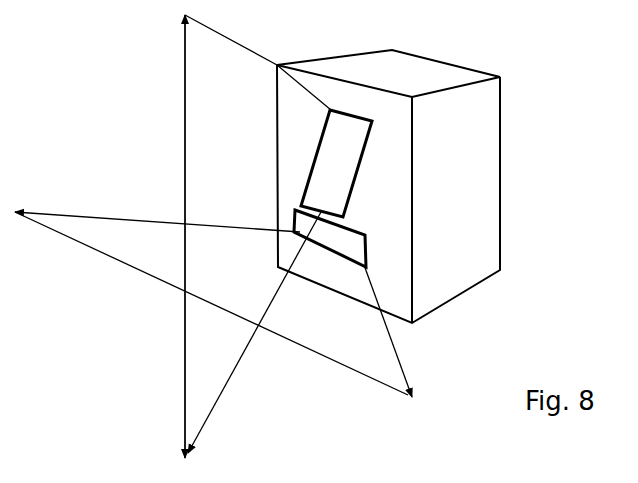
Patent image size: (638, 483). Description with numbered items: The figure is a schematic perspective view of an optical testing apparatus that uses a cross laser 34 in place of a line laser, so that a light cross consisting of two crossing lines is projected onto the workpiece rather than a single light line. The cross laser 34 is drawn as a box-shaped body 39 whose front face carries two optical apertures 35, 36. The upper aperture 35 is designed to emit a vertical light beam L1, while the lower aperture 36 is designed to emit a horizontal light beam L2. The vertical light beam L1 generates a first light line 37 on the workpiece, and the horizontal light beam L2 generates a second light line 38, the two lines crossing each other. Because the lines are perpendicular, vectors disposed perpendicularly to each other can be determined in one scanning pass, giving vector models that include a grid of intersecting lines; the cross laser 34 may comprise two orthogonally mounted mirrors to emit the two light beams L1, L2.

The cross laser 34 is at (72, 76).
The upper optical aperture 35 is at (367, 147).
The lower optical aperture 36 is at (365, 247).
The first light line 37 is at (185, 378).
The second light line 38 is at (348, 372).
The housing 39 is at (488, 97).
The vertical light beam L1 is at (250, 53).
The horizontal light beam L2 is at (397, 353).